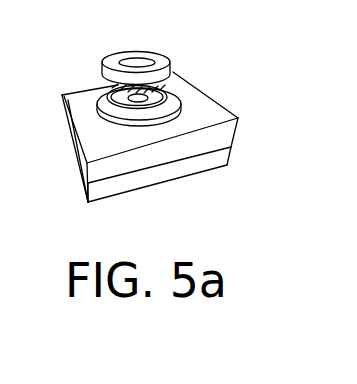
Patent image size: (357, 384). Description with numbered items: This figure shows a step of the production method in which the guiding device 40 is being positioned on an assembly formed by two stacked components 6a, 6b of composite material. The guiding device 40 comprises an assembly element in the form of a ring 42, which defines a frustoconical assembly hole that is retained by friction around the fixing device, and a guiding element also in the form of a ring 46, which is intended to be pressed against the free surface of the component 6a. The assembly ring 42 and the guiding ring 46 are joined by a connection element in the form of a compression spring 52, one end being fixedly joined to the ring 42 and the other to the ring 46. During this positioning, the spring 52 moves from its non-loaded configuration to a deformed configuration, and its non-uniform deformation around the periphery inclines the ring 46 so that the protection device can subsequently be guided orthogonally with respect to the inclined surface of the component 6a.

The guiding device 40 is at (122, 90).
The assembly ring 42 is at (157, 51).
The guiding ring 46 is at (113, 90).
The compression spring 52 is at (141, 101).
The component 6a is at (228, 132).
The component 6b is at (222, 158).